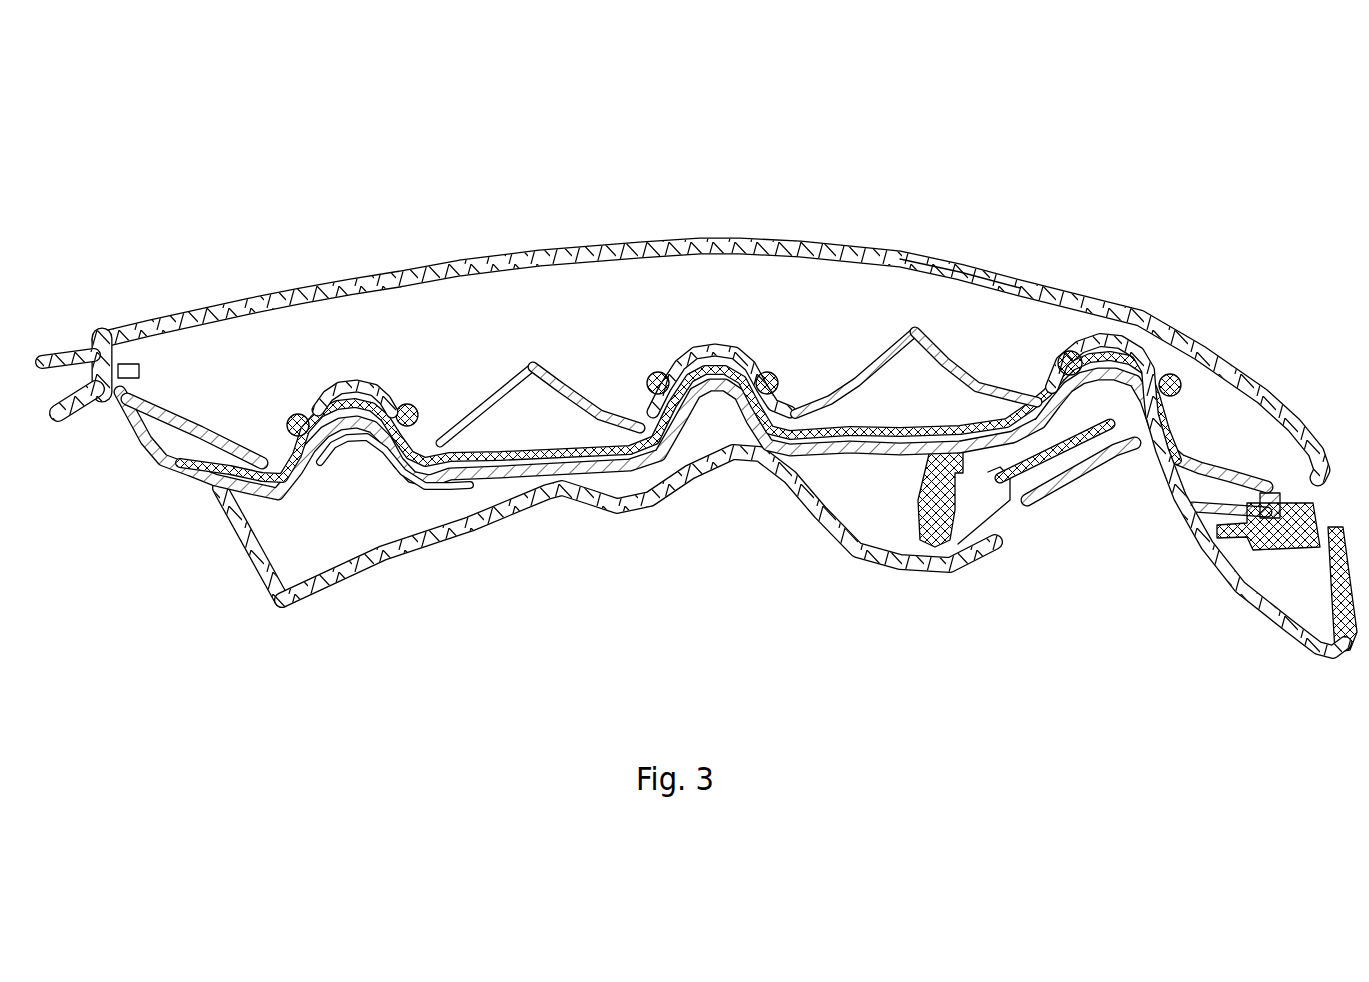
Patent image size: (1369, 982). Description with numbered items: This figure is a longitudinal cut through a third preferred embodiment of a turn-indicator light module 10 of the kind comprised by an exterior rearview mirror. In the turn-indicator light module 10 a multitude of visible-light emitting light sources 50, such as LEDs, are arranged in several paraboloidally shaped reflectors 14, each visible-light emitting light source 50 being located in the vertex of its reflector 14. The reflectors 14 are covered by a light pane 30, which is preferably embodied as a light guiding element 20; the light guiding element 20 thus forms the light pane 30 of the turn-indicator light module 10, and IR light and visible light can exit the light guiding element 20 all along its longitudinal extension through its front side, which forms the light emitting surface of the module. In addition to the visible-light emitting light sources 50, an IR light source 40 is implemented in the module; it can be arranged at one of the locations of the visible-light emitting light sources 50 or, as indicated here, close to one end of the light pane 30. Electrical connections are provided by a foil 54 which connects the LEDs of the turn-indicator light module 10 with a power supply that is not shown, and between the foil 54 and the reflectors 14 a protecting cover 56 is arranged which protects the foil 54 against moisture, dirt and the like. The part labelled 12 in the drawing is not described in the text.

The turn-indicator light module 10 is at (304, 186).
The carrier part 12 is at (240, 530).
The reflector 14 is at (196, 432).
The light guiding element 20 is at (700, 251).
The light pane 30 is at (903, 263).
The IR light source 40 is at (1173, 375).
The visible-light emitting light source 50 is at (288, 414).
The foil 54 is at (388, 482).
The protecting cover 56 is at (353, 380).